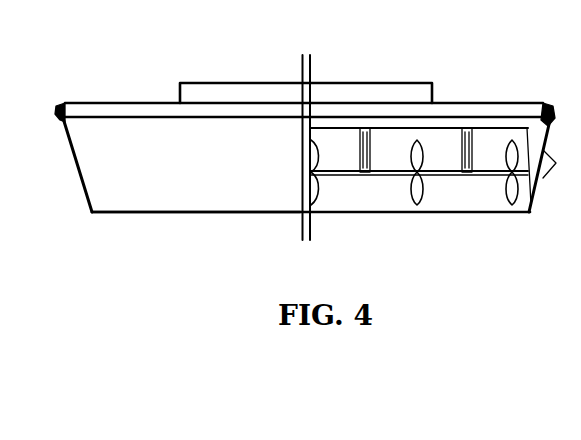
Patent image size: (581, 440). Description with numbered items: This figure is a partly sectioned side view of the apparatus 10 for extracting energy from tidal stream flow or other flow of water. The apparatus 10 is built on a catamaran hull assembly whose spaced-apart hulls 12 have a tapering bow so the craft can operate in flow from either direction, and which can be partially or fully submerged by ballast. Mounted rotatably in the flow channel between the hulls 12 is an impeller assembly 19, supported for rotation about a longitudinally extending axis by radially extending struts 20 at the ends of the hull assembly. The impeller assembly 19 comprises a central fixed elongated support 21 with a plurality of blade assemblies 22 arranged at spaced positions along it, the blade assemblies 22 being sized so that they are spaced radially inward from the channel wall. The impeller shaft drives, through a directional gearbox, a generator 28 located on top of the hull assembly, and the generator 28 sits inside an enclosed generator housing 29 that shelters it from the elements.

The apparatus 10 is at (470, 97).
The hull 12 is at (187, 190).
The impeller assembly 19 is at (453, 183).
The radially extending struts 20 is at (562, 165).
The central fixed elongated support 21 is at (342, 177).
The blade assemblies 22 is at (413, 205).
The generator 28 is at (345, 92).
The generator housing 29 is at (245, 92).